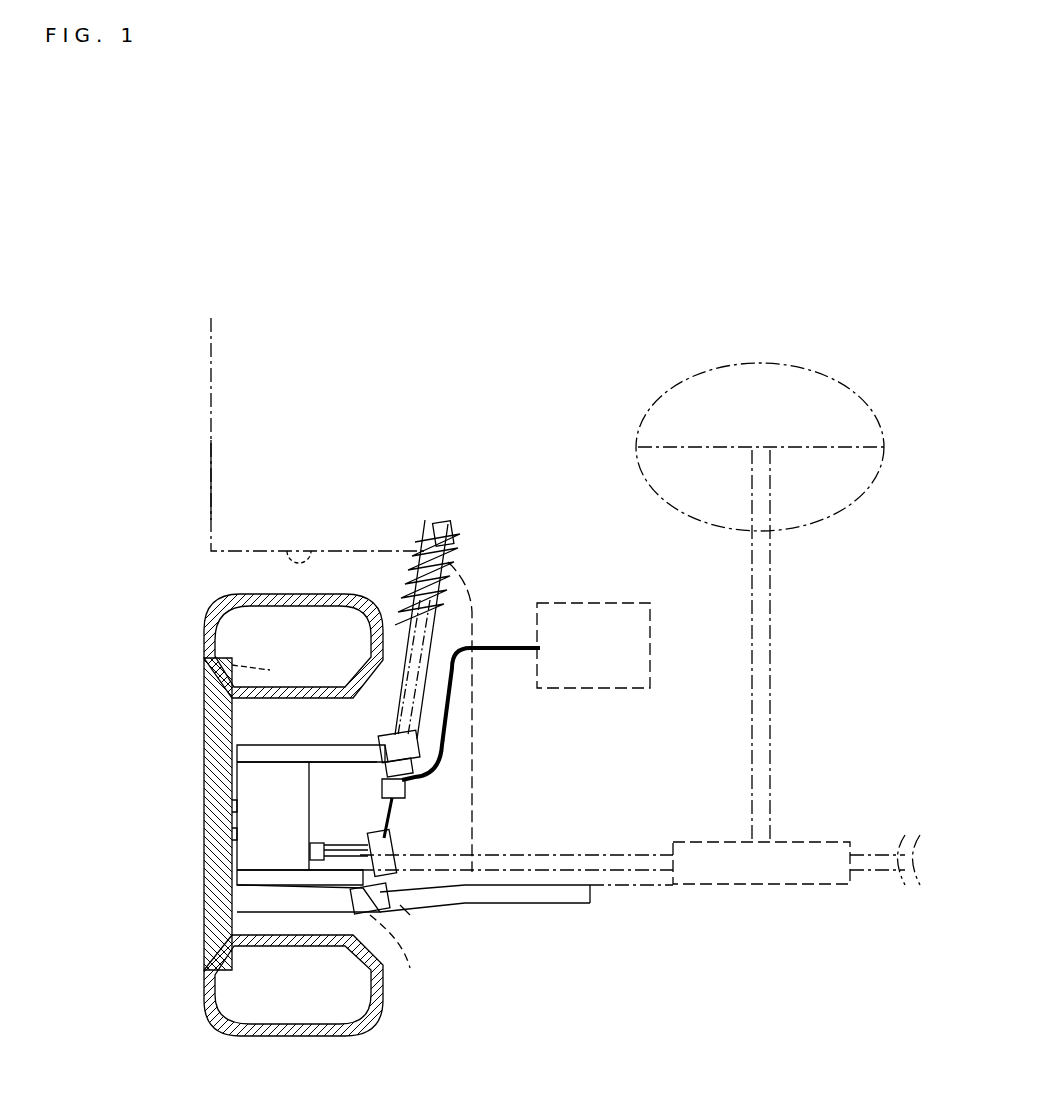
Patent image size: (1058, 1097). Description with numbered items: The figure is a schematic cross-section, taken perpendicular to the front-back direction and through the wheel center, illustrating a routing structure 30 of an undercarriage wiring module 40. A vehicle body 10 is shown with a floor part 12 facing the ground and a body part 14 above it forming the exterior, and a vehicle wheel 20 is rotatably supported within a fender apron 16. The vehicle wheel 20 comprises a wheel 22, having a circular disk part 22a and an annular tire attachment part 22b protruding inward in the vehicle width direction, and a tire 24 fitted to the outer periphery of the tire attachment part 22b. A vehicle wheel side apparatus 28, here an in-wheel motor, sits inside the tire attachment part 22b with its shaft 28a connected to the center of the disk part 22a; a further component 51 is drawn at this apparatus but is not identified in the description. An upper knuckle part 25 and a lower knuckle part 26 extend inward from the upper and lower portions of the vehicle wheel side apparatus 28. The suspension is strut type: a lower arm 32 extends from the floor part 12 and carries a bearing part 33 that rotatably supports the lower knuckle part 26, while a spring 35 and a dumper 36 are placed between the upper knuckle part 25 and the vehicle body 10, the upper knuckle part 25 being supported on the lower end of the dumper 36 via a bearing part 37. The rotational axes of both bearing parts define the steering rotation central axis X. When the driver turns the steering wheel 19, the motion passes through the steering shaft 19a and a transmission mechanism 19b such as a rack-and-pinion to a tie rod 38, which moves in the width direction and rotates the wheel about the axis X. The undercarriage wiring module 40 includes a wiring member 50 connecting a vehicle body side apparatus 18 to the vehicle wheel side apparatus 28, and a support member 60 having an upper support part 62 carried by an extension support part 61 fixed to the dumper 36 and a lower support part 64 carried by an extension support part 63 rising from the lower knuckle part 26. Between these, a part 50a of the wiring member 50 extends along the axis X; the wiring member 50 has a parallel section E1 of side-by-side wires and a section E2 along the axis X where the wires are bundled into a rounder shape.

The vehicle body 10 is at (207, 357).
The floor part 12 is at (663, 886).
The body part 14 is at (209, 468).
The fender apron 16 is at (306, 550).
The vehicle body side apparatus 18 is at (595, 604).
The steering wheel 19 is at (764, 364).
The steering shaft 19a is at (772, 688).
The transmission mechanism 19b is at (806, 842).
The vehicle wheel 20 is at (212, 606).
The wheel 22 is at (177, 809).
The disk part 22a is at (208, 698).
The tire attachment part 22b is at (208, 661).
The tire 24 is at (208, 985).
The upper knuckle part 25 is at (357, 748).
The lower knuckle part 26 is at (337, 888).
The vehicle wheel side apparatus 28 is at (268, 762).
The shaft 28a is at (206, 775).
The routing structure 30 is at (487, 582).
The lower arm 32 is at (562, 904).
The bearing part 33 is at (424, 920).
The spring 35 is at (448, 536).
The dumper 36 is at (433, 636).
The bearing part 37 is at (394, 738).
The tie rod 38 is at (637, 853).
The undercarriage wiring module 40 is at (455, 750).
The wiring member 50 is at (458, 690).
The part of wiring member 50a is at (405, 822).
The motor connector 51 is at (311, 838).
The support member 60 is at (408, 790).
The extension support part 61 is at (392, 768).
The upper support part 62 is at (382, 782).
The extension support part 63 is at (430, 887).
The lower support part 64 is at (394, 850).
The parallel section E1 is at (366, 846).
The section along steering rotation central axis E2 is at (398, 808).
The steering rotation central axis X is at (393, 954).